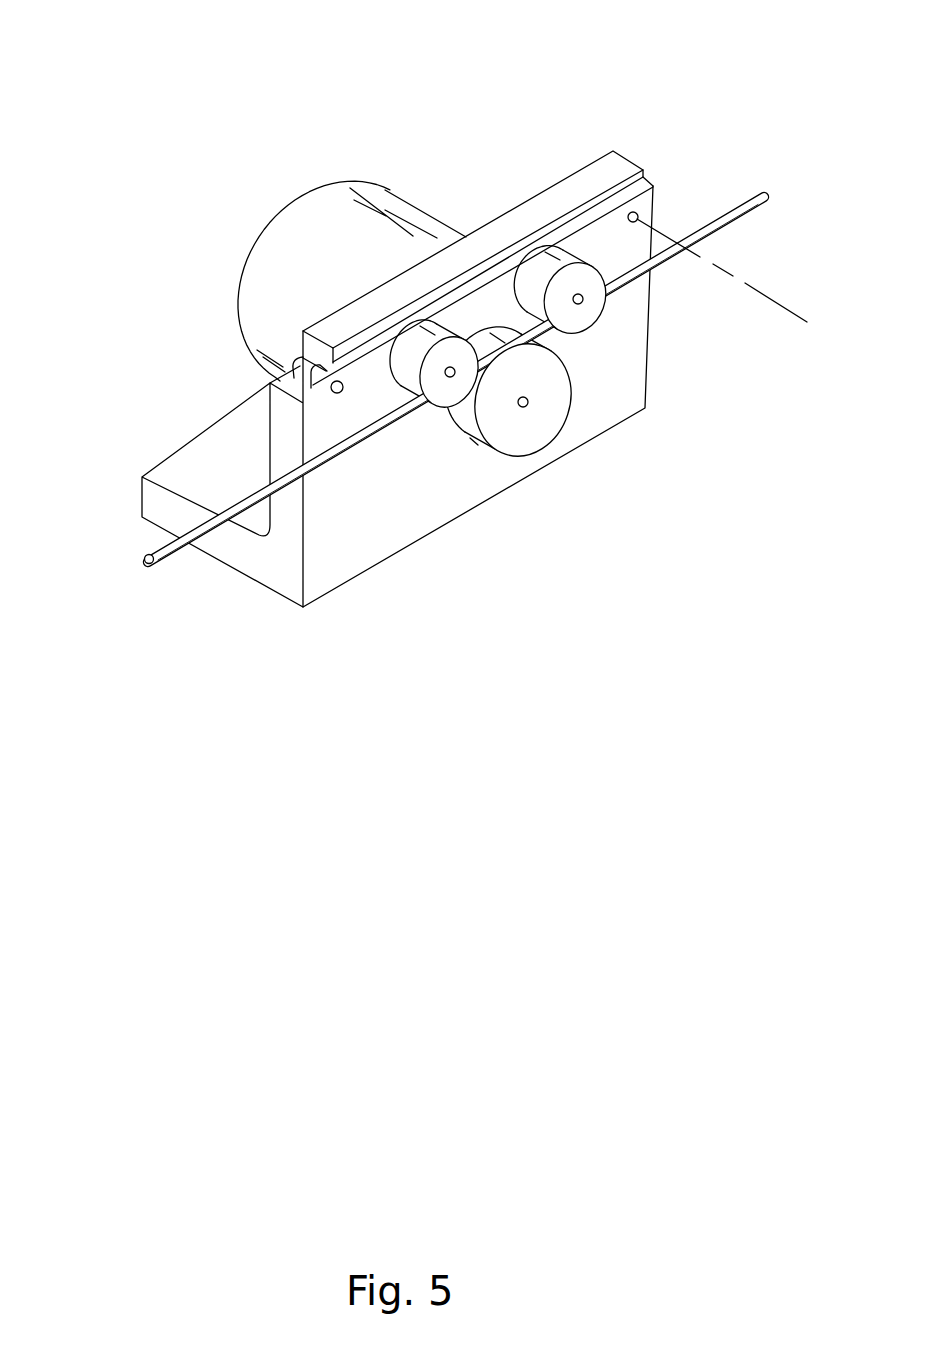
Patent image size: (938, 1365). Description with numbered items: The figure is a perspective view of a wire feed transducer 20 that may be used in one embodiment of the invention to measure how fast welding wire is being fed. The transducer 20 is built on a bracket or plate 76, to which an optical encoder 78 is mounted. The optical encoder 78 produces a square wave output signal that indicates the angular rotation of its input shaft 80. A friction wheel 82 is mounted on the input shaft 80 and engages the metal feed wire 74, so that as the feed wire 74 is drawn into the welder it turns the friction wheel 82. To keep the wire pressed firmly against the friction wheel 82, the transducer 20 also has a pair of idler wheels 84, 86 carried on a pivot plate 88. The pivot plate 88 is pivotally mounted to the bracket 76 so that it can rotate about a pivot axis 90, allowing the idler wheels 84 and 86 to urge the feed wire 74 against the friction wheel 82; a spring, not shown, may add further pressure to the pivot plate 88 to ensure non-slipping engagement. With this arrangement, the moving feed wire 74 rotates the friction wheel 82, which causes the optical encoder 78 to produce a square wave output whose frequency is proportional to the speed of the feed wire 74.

The wire feed transducer 20 is at (153, 78).
The feed wire 74 is at (149, 566).
The bracket 76 is at (277, 598).
The optical encoder 78 is at (395, 193).
The input shaft 80 is at (525, 404).
The friction wheel 82 is at (512, 464).
The idler wheel 84 is at (425, 410).
The idler wheel 86 is at (601, 316).
The pivot plate 88 is at (658, 191).
The pivot axis 90 is at (764, 292).